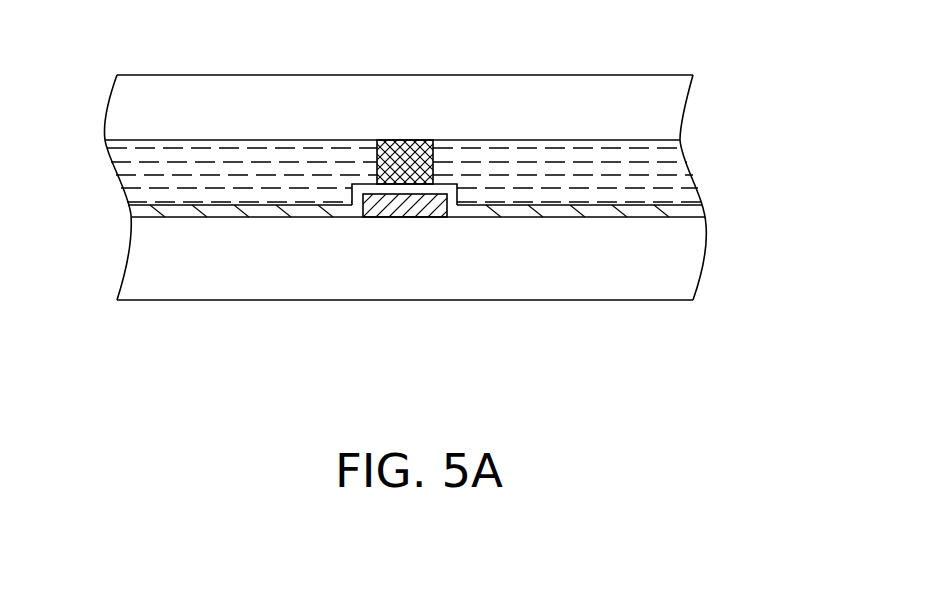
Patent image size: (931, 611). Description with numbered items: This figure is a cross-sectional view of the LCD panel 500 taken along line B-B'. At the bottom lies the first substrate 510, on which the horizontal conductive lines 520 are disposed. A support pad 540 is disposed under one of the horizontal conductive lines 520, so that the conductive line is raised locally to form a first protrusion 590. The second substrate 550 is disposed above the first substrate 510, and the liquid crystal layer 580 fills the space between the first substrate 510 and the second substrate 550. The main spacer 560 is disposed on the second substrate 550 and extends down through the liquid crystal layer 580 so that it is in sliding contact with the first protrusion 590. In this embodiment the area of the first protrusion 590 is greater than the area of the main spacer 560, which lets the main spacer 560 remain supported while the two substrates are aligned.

The LCD panel 500 is at (423, 203).
The first substrate 510 is at (718, 205).
The horizontal conductive lines 520 is at (132, 209).
The support pads 540 is at (393, 217).
The second substrate 550 is at (675, 111).
The main spacer 560 is at (408, 140).
The liquid crystal layer 580 is at (678, 166).
The first protrusion 590 is at (458, 183).